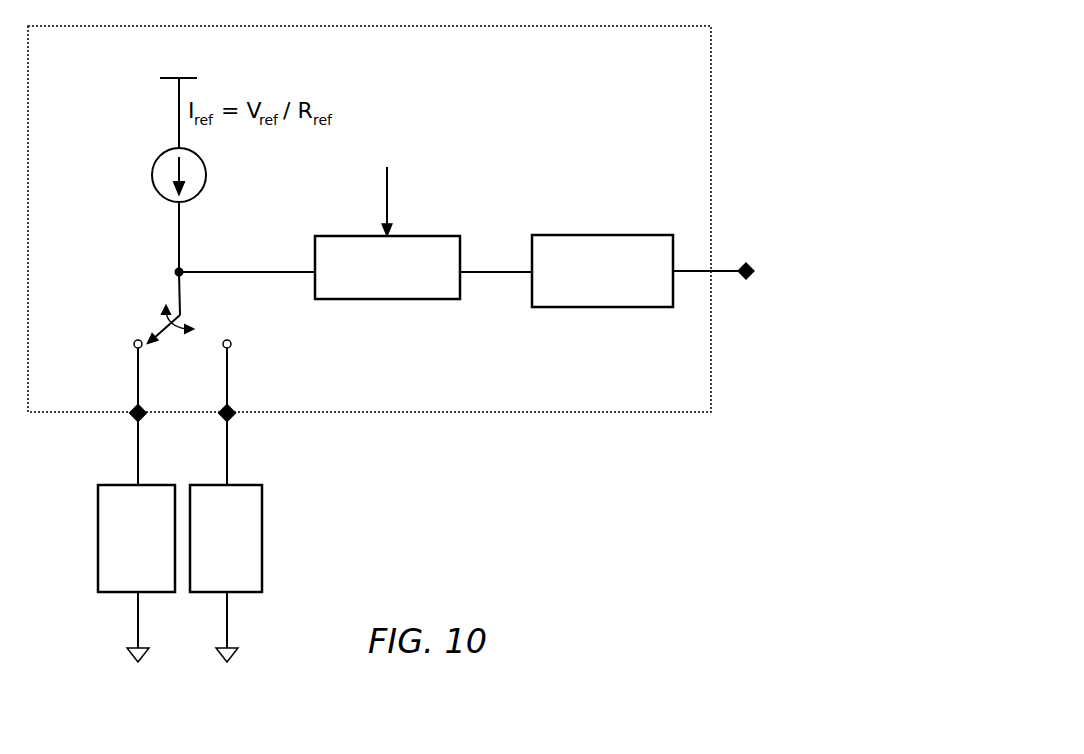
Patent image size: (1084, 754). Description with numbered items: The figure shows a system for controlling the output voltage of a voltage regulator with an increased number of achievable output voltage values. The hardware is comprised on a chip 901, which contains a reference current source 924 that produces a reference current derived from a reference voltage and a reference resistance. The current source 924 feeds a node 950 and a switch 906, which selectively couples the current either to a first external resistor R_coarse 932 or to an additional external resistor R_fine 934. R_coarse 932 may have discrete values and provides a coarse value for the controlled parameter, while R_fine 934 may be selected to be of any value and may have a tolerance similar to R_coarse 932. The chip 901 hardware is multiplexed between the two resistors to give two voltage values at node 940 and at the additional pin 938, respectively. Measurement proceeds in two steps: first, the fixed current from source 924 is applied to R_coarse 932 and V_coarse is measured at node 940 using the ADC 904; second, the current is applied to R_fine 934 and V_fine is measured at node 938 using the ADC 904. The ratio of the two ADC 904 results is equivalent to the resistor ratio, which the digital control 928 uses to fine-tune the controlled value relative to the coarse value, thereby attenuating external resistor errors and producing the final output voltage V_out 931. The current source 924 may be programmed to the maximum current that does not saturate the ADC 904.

The chip 901 is at (703, 401).
The reference current source 924 is at (152, 169).
The node 950 is at (176, 272).
The switch 906 is at (160, 326).
The ADC 904 is at (315, 238).
The digital control 928 is at (620, 307).
The output voltage V_out 931 is at (727, 273).
The node 940 is at (136, 422).
The pin 938 is at (229, 422).
The coarse resistor R_coarse 932 is at (127, 596).
The fine resistor R_fine 934 is at (240, 595).